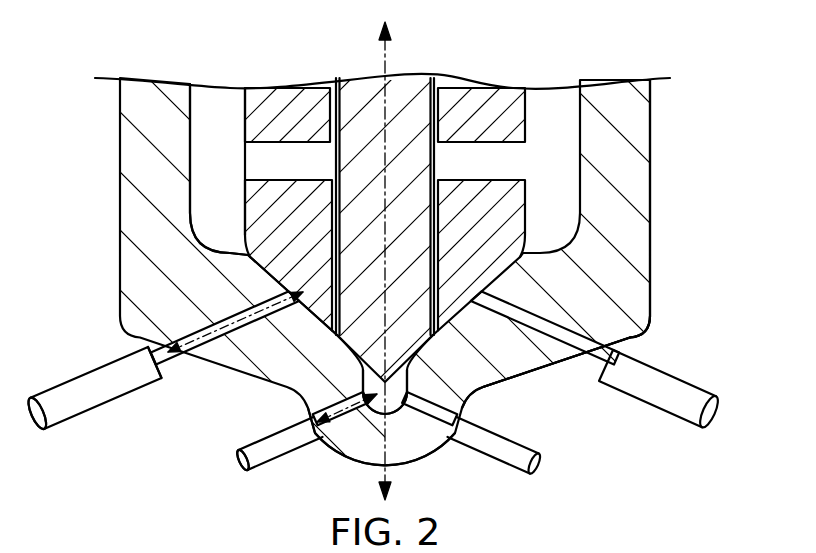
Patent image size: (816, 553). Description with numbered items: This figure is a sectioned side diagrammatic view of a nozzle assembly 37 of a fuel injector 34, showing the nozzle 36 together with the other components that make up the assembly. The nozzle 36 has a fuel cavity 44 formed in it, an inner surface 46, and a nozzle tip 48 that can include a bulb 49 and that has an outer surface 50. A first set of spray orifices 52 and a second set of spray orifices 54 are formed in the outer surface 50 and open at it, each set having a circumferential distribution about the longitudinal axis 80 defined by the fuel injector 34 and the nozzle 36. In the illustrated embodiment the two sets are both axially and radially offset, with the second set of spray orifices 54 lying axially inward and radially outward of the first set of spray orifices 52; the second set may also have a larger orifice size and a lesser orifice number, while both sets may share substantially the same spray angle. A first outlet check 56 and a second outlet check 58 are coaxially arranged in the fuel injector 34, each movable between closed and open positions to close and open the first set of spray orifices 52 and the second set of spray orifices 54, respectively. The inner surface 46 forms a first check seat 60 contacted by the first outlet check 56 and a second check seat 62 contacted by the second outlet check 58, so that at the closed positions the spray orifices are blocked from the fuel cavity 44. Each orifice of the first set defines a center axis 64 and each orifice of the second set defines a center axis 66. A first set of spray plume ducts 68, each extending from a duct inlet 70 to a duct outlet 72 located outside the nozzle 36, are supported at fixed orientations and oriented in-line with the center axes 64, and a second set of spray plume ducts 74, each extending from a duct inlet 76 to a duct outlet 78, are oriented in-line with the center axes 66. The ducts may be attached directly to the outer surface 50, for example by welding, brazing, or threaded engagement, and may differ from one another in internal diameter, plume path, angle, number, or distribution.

The fuel injector 34 is at (623, 90).
The nozzle 36 is at (687, 209).
The nozzle assembly 37 is at (640, 209).
The fuel cavity 44 is at (225, 90).
The inner surface 46 is at (318, 326).
The nozzle tip 48 is at (503, 389).
The bulb 49 is at (440, 452).
The outer surface 50 is at (566, 373).
The first set of spray orifices 52 is at (320, 422).
The second set of spray orifices 54 is at (218, 332).
The first outlet check 56 is at (412, 88).
The second outlet check 58 is at (507, 96).
The first check seat 60 is at (405, 370).
The second check seat 62 is at (280, 273).
The center axis 64 is at (352, 393).
The center axis 66 is at (250, 316).
The first set of spray plume ducts 68 is at (298, 448).
The duct inlet 70 is at (330, 432).
The duct outlet 72 is at (240, 462).
The second set of spray plume ducts 74 is at (105, 396).
The duct inlet 76 is at (168, 366).
The duct outlet 78 is at (40, 422).
The longitudinal axis 80 is at (382, 58).